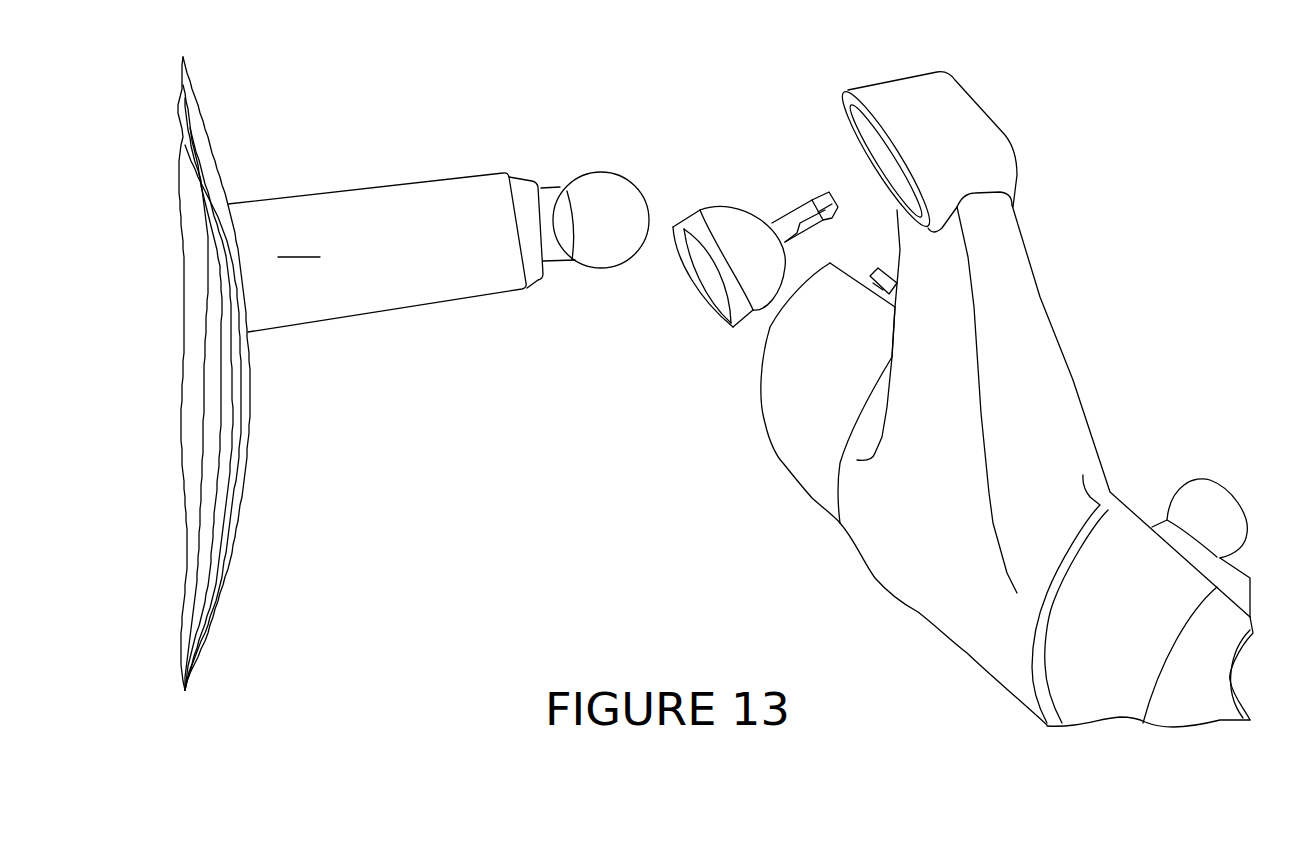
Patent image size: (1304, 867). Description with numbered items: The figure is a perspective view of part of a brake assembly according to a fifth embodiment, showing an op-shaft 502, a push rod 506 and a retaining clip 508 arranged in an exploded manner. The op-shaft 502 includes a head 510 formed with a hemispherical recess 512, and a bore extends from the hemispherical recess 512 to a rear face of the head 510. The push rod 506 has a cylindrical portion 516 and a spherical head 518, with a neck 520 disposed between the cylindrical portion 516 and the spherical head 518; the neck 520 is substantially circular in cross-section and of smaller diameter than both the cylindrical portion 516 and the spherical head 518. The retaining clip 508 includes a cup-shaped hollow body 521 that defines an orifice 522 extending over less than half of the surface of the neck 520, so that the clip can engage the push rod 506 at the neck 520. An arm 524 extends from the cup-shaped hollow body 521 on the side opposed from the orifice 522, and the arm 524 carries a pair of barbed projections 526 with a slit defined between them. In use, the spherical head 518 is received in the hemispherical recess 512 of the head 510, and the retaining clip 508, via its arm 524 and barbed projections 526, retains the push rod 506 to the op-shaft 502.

The op-shaft 502 is at (1033, 328).
The push rod 506 is at (385, 284).
The retaining clip 508 is at (770, 263).
The head 510 is at (988, 145).
The hemispherical recess 512 is at (775, 212).
The cylindrical portion 516 is at (390, 298).
The spherical head 518 is at (608, 182).
The neck 520 is at (549, 185).
The cup-shaped hollow body 521 is at (750, 258).
The orifice 522 is at (673, 225).
The arm 524 is at (777, 129).
The barbed projections 526 is at (792, 203).